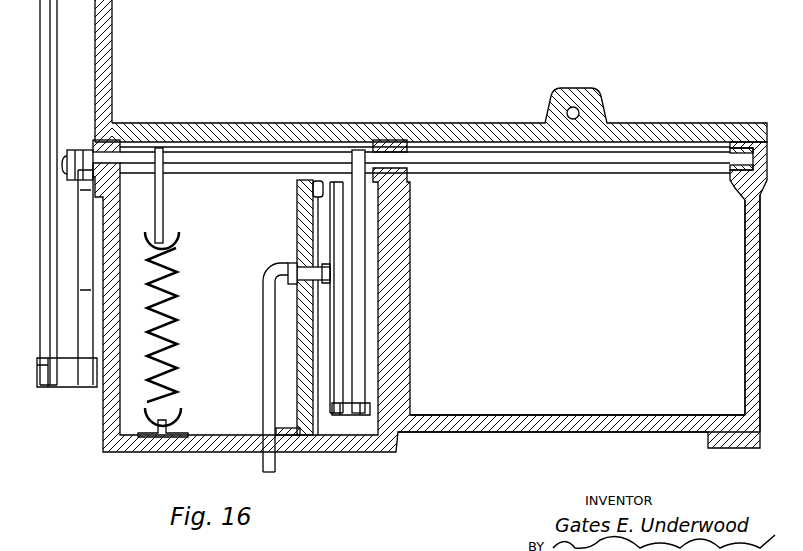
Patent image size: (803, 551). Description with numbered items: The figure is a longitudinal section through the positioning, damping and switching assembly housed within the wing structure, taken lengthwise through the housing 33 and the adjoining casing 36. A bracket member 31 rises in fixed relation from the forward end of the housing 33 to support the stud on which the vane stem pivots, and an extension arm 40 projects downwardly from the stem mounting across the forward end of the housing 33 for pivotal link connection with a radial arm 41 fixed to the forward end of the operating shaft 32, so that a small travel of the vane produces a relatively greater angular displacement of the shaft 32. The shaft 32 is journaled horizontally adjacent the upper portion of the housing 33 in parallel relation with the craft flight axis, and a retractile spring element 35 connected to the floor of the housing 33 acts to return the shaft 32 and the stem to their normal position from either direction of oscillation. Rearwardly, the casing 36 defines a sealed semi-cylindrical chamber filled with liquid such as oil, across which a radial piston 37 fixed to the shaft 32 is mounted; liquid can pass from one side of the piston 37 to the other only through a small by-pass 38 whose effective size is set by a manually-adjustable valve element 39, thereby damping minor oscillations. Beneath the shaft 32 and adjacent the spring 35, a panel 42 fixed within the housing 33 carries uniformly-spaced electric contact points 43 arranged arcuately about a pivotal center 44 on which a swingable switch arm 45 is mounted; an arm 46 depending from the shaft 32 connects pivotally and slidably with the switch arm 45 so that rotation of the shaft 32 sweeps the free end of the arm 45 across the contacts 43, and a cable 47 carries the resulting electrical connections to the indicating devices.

The bracket member 31 is at (111, 70).
The operating shaft 32 is at (214, 168).
The housing 33 is at (106, 405).
The retractile spring element 35 is at (173, 300).
The casing or housing 36 is at (750, 292).
The radial piston 37 is at (577, 281).
The by-pass conduit or passage 38 is at (580, 112).
The valve element 39 is at (164, 206).
The extension arm 40 is at (44, 124).
The radial arm 41 is at (86, 239).
The panel 42 is at (297, 218).
The electric contact points 43 is at (312, 178).
The pivotal center 44 is at (303, 279).
The switch arm or contact member 45 is at (338, 320).
The arm 46 is at (357, 411).
The cable 47 is at (266, 341).